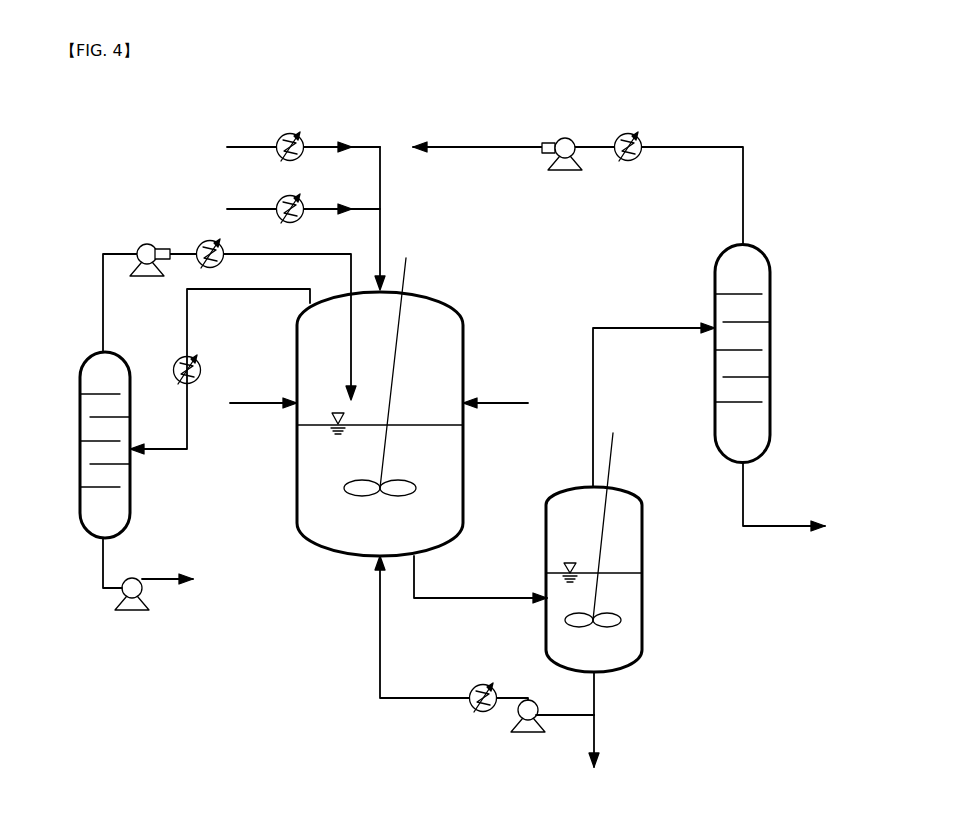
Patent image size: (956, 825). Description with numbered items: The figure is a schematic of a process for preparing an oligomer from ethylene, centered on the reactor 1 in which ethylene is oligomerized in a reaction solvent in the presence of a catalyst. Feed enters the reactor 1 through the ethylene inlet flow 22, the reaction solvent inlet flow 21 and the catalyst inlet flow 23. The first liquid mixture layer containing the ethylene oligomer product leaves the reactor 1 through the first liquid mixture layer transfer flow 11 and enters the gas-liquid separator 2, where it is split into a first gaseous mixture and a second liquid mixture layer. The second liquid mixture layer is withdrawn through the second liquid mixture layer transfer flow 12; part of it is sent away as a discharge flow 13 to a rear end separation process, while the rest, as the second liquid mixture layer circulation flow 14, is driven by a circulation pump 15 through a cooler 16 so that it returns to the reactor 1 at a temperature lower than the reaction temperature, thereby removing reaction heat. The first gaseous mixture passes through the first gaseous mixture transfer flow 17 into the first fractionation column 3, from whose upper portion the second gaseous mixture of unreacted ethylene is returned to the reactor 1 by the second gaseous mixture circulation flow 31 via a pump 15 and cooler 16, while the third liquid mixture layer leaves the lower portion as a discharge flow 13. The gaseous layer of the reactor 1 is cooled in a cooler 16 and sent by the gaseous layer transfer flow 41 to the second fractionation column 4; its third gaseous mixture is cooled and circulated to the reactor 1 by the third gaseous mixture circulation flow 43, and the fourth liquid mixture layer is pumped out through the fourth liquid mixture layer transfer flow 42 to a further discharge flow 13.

The reactor 1 is at (455, 303).
The gas-liquid separator 2 is at (642, 533).
The first fractionation column 3 is at (770, 262).
The second fractionation column 4 is at (95, 352).
The first liquid mixture layer transfer flow 11 is at (480, 597).
The second liquid mixture layer transfer flow 12 is at (594, 680).
The discharge flow 13 is at (165, 578).
The second liquid mixture layer circulation flow 14 is at (577, 716).
The circulation pump 15 is at (567, 136).
The cooler 16 is at (633, 132).
The first gaseous mixture transfer flow 17 is at (668, 325).
The reaction solvent inlet flow 21 is at (245, 207).
The ethylene inlet flow 22 is at (257, 145).
The catalyst inlet flow 23 is at (254, 400).
The second gaseous mixture circulation flow 31 is at (745, 170).
The gaseous layer transfer flow 41 is at (252, 290).
The fourth liquid mixture layer transfer flow 42 is at (103, 556).
The third gaseous mixture circulation flow 43 is at (103, 290).